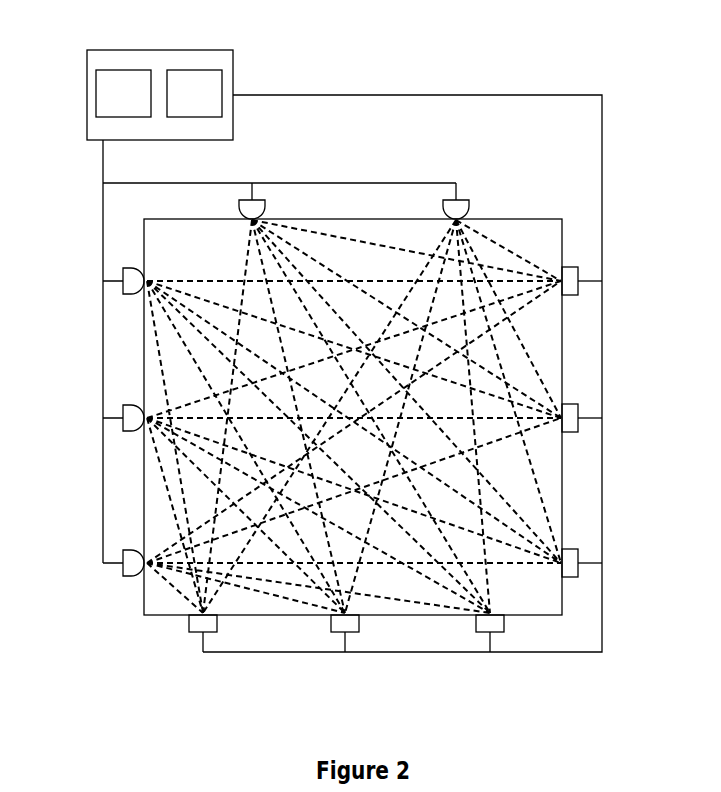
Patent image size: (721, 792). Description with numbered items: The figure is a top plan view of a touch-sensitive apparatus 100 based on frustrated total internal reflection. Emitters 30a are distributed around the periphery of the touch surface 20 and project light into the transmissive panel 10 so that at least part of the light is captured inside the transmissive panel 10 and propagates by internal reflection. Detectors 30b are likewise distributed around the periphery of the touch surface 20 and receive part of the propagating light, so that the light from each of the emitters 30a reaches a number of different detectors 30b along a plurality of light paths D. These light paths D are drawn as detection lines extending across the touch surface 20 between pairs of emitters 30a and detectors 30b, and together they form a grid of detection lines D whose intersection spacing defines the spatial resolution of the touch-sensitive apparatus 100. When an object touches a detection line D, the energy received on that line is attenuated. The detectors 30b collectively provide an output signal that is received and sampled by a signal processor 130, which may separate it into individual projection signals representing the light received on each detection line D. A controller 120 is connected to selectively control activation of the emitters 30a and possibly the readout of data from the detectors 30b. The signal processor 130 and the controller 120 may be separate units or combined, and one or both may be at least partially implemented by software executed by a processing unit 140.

The touch-sensitive apparatus 100 is at (520, 87).
The processing unit 140 is at (213, 62).
The signal processor 130 is at (123, 93).
The controller 120 is at (194, 93).
The transmissive panel 10 is at (200, 249).
The touch surface 20 is at (520, 600).
The emitters 30a is at (455, 200).
The detectors 30b is at (568, 562).
The light paths D is at (550, 394).